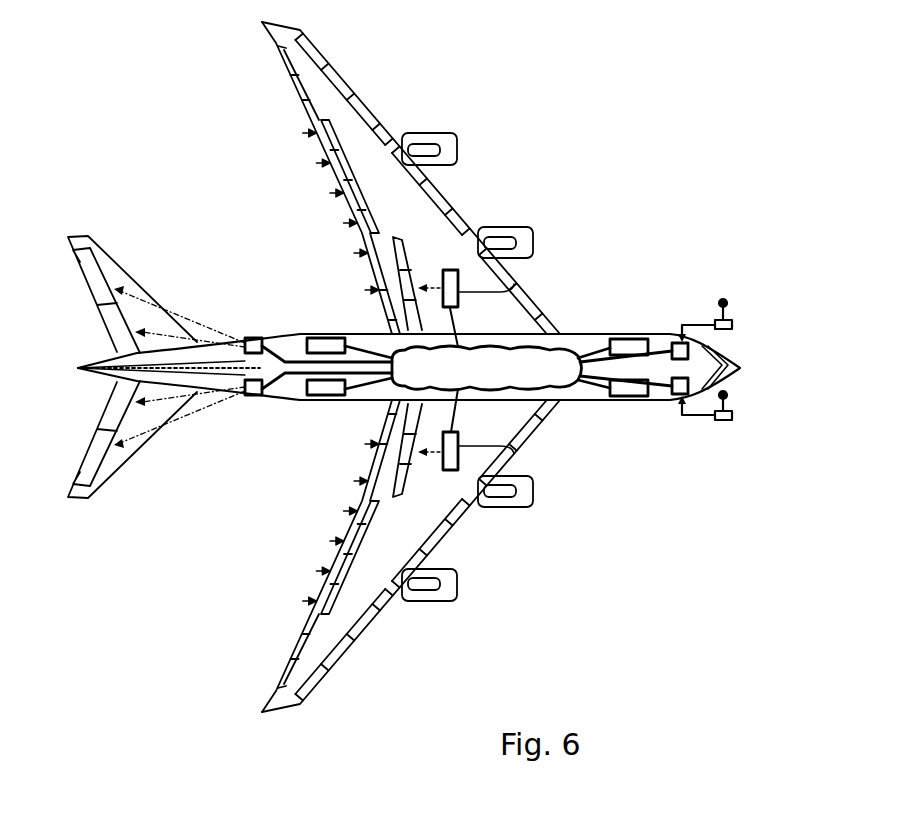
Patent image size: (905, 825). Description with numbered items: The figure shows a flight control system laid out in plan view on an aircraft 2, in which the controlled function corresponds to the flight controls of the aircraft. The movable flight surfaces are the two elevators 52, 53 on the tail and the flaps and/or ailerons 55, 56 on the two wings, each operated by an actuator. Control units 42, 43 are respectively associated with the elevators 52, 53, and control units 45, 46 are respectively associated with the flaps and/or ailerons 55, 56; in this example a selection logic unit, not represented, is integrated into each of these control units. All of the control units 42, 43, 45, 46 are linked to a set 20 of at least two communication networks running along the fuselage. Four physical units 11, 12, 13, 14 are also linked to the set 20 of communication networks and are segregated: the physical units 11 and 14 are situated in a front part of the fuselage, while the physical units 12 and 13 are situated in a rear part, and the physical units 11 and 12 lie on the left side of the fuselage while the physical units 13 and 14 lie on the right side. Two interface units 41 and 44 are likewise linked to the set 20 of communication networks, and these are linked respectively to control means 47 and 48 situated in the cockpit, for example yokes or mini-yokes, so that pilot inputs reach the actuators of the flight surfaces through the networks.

The aircraft 2 is at (417, 207).
The physical unit 11 is at (628, 337).
The physical unit 12 is at (328, 336).
The physical unit 13 is at (328, 398).
The physical unit 14 is at (628, 399).
The set of communication networks 20 is at (494, 381).
The interface unit 41 is at (679, 341).
The control unit 42 is at (250, 336).
The control unit 43 is at (250, 398).
The interface unit 44 is at (680, 397).
The control unit 45 is at (514, 284).
The control unit 46 is at (514, 454).
The control means 47 is at (732, 323).
The control means 48 is at (732, 413).
The elevator 52 is at (112, 325).
The elevator 53 is at (112, 409).
The flap or aileron 55 is at (412, 312).
The flap or aileron 56 is at (412, 422).